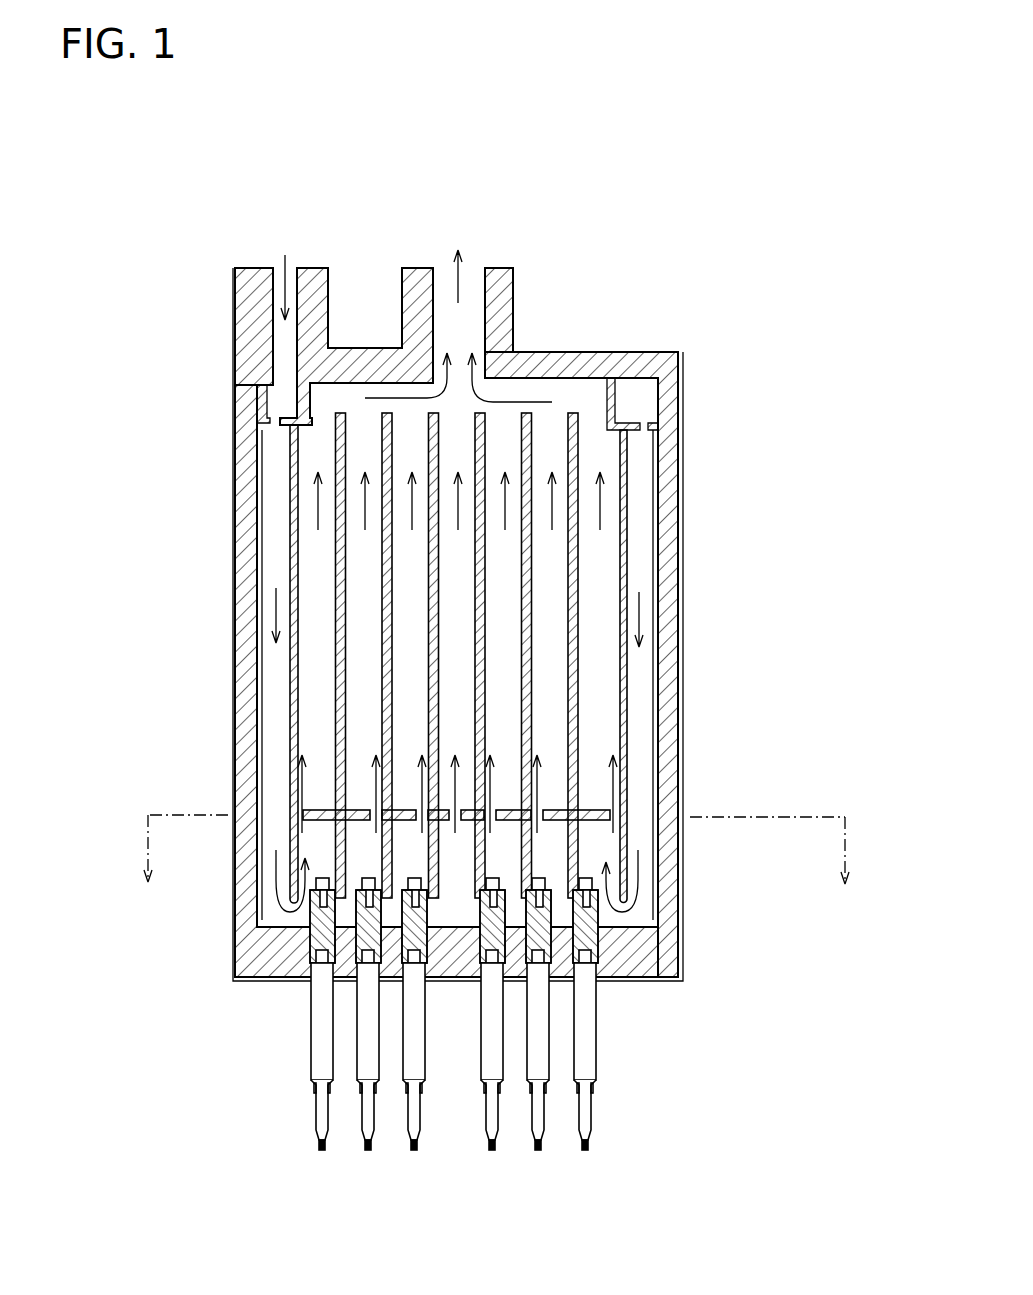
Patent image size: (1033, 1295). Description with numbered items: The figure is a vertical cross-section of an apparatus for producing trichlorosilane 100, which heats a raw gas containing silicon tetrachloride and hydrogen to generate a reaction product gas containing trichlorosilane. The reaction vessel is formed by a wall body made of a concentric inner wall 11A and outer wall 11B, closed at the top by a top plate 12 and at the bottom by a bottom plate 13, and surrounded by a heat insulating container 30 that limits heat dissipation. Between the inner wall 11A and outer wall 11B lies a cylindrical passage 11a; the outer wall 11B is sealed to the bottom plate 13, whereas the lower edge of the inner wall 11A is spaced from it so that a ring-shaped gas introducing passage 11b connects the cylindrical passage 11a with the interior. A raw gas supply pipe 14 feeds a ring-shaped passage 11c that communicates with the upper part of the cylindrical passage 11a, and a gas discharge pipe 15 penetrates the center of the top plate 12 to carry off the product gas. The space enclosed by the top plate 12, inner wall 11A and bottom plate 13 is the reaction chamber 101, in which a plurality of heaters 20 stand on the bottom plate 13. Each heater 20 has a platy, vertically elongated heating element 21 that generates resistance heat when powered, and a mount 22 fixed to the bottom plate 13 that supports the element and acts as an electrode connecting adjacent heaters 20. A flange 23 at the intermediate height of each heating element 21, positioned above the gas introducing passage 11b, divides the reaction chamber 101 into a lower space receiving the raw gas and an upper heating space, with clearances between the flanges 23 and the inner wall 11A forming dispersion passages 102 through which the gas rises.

The apparatus for producing trichlorosilane 100 is at (328, 225).
The inner wall 11A is at (296, 488).
The outer wall 11B is at (260, 560).
The cylindrical passage 11a is at (277, 698).
The gas introducing passage 11b is at (640, 923).
The ring-shaped passage 11c is at (643, 393).
The top plate 12 is at (547, 377).
The bottom plate 13 is at (280, 945).
The raw gas supply pipe 14 is at (263, 335).
The gas discharge pipe 15 is at (515, 290).
The heater 20 is at (550, 648).
The heating element 21 is at (530, 563).
The mount 22 is at (603, 953).
The flange 23 is at (600, 812).
The heat insulating container 30 is at (675, 387).
The reaction chamber 101 is at (455, 637).
The dispersion passage 102 is at (640, 795).